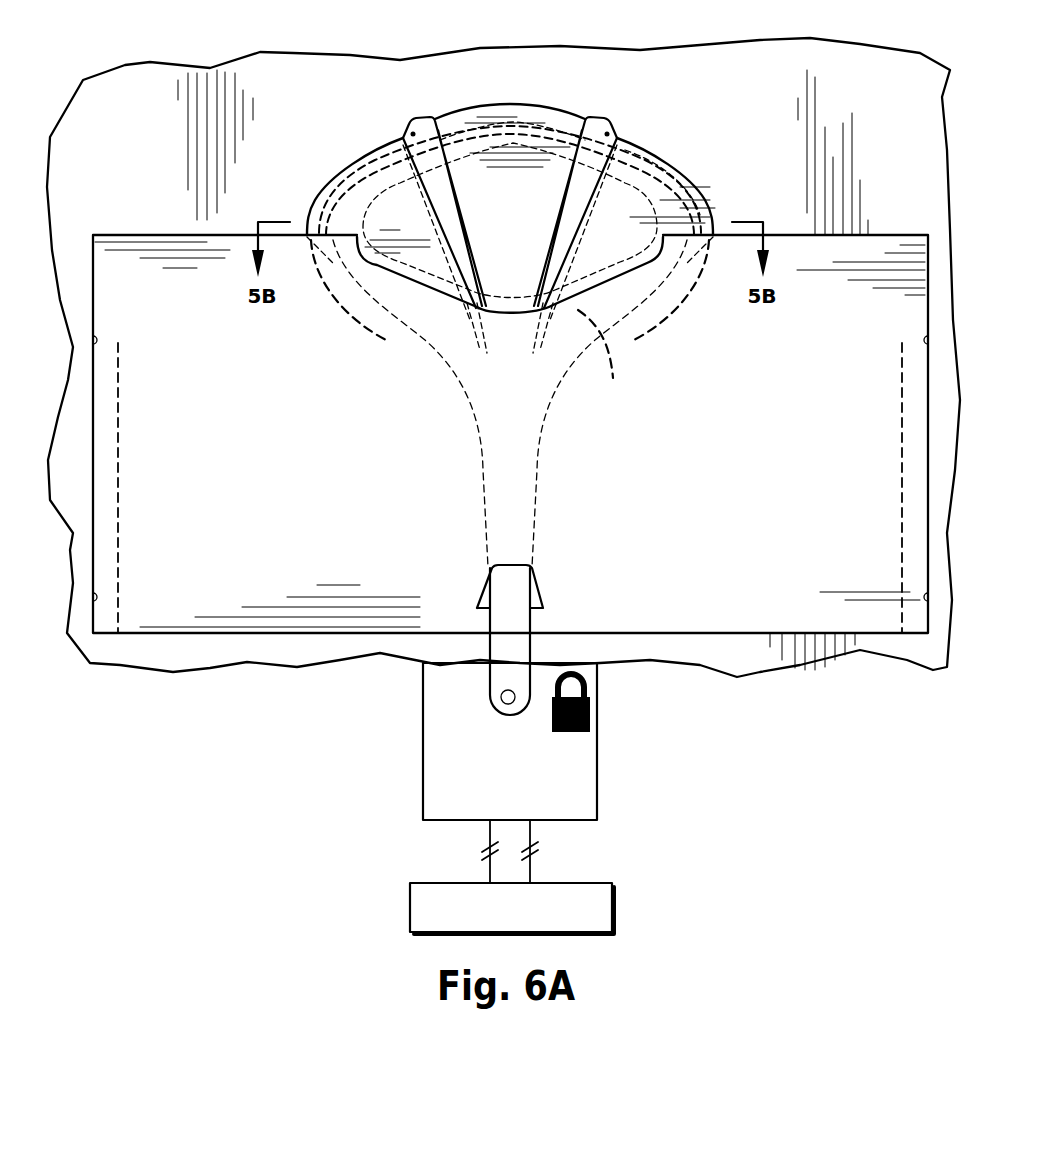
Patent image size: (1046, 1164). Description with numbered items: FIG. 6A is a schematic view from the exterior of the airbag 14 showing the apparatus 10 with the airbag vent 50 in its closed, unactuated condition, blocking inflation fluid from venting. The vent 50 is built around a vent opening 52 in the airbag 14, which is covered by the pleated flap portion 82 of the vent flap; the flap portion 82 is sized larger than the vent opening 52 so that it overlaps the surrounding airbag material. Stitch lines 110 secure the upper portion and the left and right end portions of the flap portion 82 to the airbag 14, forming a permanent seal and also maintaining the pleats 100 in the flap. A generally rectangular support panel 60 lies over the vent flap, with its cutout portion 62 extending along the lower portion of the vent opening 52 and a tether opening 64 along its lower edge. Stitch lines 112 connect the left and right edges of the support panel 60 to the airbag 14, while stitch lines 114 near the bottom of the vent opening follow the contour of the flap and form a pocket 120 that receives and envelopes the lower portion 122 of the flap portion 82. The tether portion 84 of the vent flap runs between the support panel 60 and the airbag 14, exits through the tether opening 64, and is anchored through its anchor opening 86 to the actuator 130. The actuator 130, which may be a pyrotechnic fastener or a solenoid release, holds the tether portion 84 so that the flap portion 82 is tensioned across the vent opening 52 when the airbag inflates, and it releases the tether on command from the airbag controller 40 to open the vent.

The apparatus 10 is at (204, 135).
The airbag 14 is at (112, 148).
The airbag controller 40 is at (600, 893).
The airbag vent 50 is at (370, 138).
The vent opening 52 is at (623, 182).
The support panel 60 is at (143, 273).
The cutout portion 62 is at (443, 297).
The tether opening 64 is at (537, 590).
The flap portion 82 is at (510, 177).
The tether portion 84 is at (505, 610).
The anchor opening 86 is at (505, 700).
The pleats 100 is at (440, 207).
The stitch lines 110 is at (566, 143).
The stitch lines 112 is at (118, 520).
The stitch lines 114 is at (363, 320).
The pocket 120 is at (347, 283).
The lower portion 122 is at (603, 358).
The actuator 130 is at (567, 753).